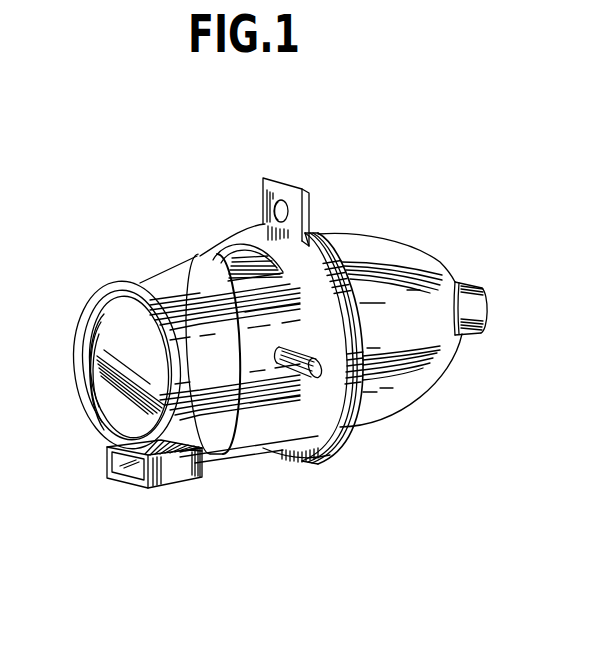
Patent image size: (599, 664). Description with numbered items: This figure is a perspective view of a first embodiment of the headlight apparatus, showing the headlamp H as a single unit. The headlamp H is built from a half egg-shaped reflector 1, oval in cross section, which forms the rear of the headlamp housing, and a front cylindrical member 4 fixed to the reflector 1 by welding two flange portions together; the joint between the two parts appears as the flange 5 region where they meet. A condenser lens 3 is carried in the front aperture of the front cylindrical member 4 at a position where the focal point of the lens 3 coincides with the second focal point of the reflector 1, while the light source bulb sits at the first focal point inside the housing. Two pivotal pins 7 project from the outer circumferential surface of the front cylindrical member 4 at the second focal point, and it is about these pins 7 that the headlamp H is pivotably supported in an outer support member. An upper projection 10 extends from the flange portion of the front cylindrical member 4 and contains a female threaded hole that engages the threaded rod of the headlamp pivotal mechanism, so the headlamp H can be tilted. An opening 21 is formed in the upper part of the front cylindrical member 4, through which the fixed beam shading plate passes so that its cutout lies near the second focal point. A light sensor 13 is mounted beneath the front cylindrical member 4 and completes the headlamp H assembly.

The reflector 1 is at (414, 254).
The condenser lens 3 is at (96, 379).
The front cylindrical member 4 is at (138, 283).
The flange 5 is at (325, 459).
The pivotal pin 7 is at (293, 373).
The upper projection 10 is at (289, 178).
The light sensor 13 is at (167, 479).
The opening 21 is at (226, 257).
The headlamp H is at (340, 231).